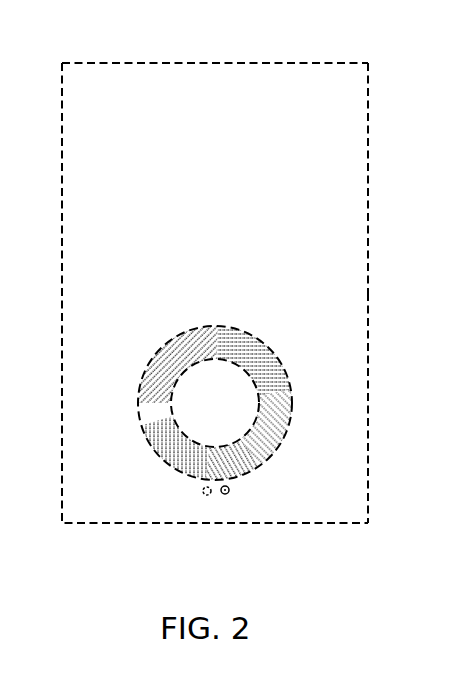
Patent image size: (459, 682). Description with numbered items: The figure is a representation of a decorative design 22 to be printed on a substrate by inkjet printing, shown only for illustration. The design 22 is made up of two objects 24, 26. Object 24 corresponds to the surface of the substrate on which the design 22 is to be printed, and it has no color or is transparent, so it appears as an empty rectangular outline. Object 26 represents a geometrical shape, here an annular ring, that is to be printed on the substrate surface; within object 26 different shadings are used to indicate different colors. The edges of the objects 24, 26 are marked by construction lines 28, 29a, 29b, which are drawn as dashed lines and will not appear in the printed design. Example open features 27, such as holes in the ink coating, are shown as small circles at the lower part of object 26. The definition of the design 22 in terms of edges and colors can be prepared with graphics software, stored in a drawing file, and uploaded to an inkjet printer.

The decorative design 22 is at (212, 58).
The object 24 is at (357, 143).
The object 26 is at (253, 340).
The open features 27 is at (205, 496).
The construction line 28 is at (369, 90).
The construction line 29a is at (180, 335).
The construction line 29b is at (218, 360).